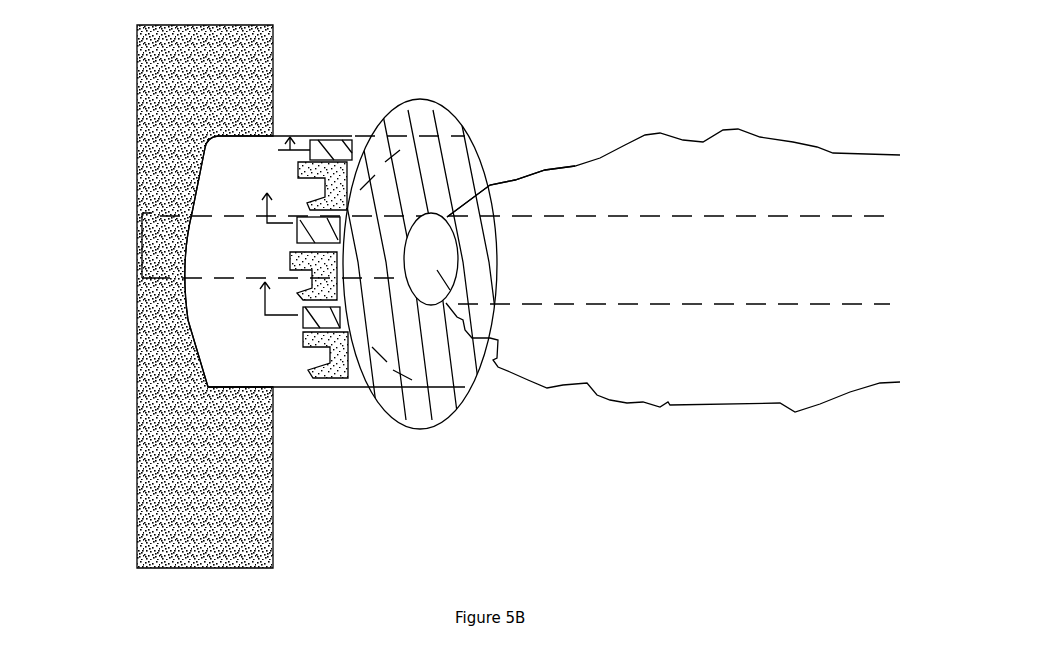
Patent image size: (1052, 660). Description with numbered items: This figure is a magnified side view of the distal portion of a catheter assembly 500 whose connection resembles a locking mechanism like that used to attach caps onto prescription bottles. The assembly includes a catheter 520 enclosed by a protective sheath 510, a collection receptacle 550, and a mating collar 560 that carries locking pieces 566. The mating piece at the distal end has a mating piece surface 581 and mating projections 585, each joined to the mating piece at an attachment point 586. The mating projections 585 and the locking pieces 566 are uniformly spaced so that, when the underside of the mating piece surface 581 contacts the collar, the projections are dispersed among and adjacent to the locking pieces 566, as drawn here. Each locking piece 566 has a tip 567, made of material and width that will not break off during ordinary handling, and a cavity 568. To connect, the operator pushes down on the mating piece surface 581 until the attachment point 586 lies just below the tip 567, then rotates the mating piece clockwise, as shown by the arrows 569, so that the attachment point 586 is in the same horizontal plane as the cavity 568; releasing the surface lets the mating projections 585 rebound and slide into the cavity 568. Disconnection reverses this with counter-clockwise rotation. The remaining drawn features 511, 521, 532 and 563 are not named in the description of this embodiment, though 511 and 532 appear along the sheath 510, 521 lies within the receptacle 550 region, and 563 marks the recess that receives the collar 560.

The catheter assembly 500 is at (64, 259).
The protective sheath 510 is at (683, 140).
The upper housing wall 511 is at (518, 197).
The catheter 520 is at (678, 272).
The wall thickness region 521 is at (174, 235).
The lower housing wall 532 is at (465, 335).
The collection receptacle 550 is at (252, 73).
The mating collar 560 is at (300, 378).
The recess in mounting wall 563 is at (213, 122).
The locking pieces 566 is at (343, 378).
The tip 567 is at (318, 378).
The cavity 568 is at (325, 352).
The arrows 569 is at (278, 225).
The mating piece surface 581 is at (430, 170).
The mating projections 585 is at (345, 145).
The attachment points 586 is at (358, 178).